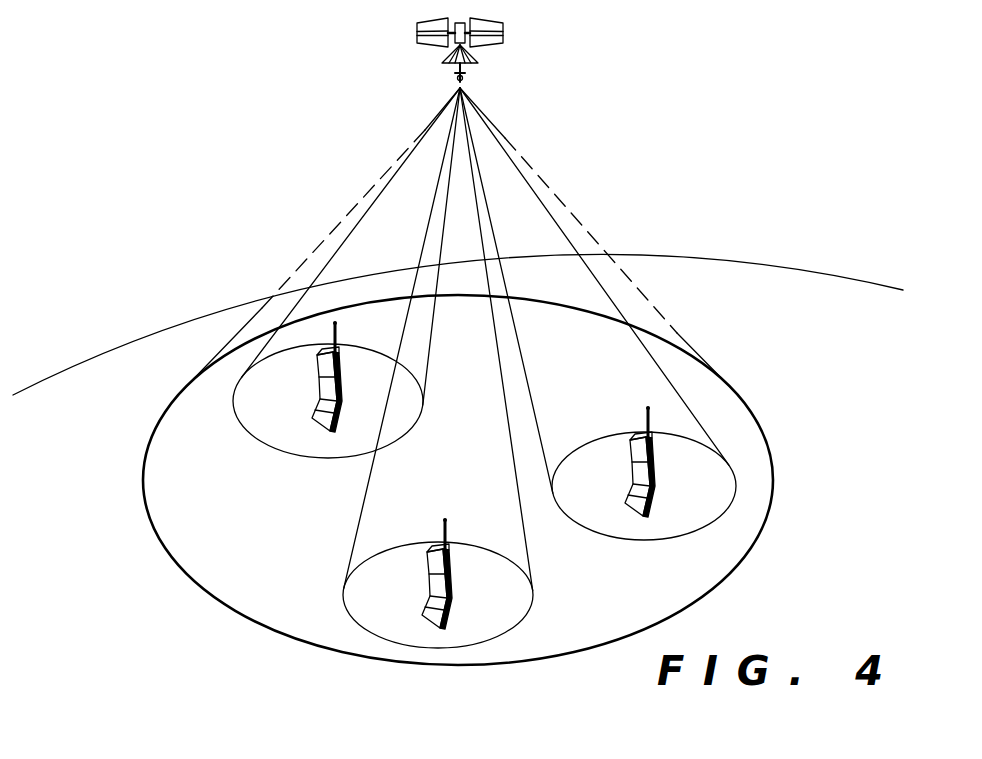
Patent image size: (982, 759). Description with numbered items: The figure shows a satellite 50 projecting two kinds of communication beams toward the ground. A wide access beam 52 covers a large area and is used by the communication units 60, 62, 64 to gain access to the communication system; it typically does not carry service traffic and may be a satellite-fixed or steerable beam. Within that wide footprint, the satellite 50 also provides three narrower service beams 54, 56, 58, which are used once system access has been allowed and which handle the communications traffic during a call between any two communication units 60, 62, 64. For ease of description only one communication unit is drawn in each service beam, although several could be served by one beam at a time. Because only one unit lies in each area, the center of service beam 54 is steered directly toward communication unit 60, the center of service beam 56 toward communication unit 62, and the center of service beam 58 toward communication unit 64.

The satellite 50 is at (487, 47).
The access beam 52 is at (182, 570).
The service beam 54 is at (628, 541).
The service beam 56 is at (343, 596).
The service beam 58 is at (316, 458).
The communication unit 60 is at (657, 462).
The communication unit 62 is at (454, 572).
The communication unit 64 is at (314, 402).